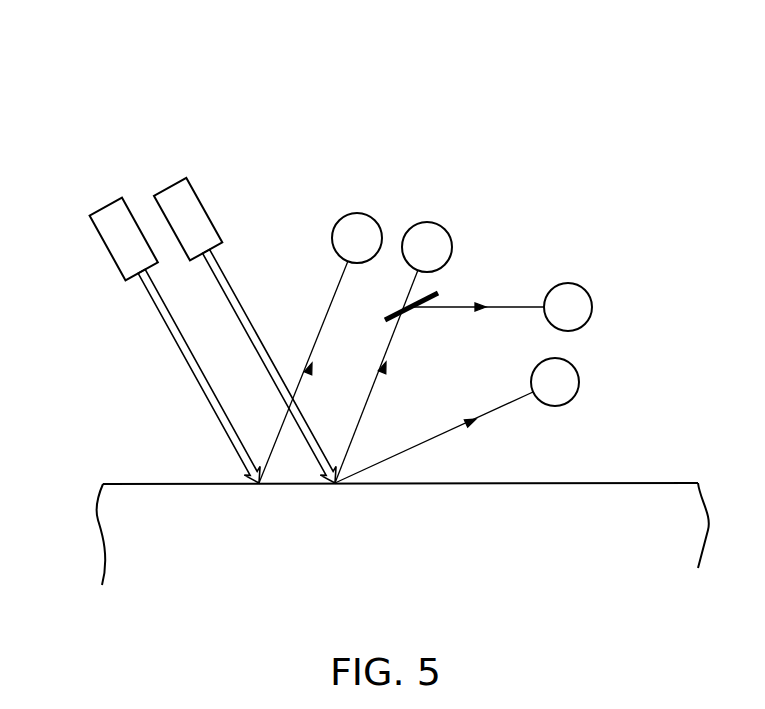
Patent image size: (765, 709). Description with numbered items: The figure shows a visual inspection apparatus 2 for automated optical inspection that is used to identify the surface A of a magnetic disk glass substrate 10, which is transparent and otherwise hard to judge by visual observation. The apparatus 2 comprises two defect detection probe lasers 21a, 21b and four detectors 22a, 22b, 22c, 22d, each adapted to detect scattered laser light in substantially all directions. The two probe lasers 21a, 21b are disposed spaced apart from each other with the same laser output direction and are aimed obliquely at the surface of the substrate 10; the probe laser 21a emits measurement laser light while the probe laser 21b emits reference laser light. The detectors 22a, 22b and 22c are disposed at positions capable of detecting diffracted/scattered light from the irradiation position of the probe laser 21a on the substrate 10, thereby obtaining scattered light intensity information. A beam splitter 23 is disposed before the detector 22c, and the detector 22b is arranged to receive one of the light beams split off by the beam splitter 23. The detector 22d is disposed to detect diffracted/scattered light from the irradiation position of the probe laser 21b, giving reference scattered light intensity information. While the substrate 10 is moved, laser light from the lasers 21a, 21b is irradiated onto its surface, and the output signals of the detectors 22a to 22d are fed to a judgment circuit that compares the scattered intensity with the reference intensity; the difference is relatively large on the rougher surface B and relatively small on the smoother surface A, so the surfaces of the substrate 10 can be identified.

The visual inspection apparatus 2 is at (410, 102).
The magnetic disk glass substrate 10 is at (630, 483).
The defect detection probe laser 21a is at (167, 182).
The defect detection probe laser 21b is at (105, 203).
The detector 22a is at (574, 367).
The detector 22b is at (586, 291).
The detector 22c is at (441, 226).
The detector 22d is at (369, 215).
The beam splitter 23 is at (440, 292).